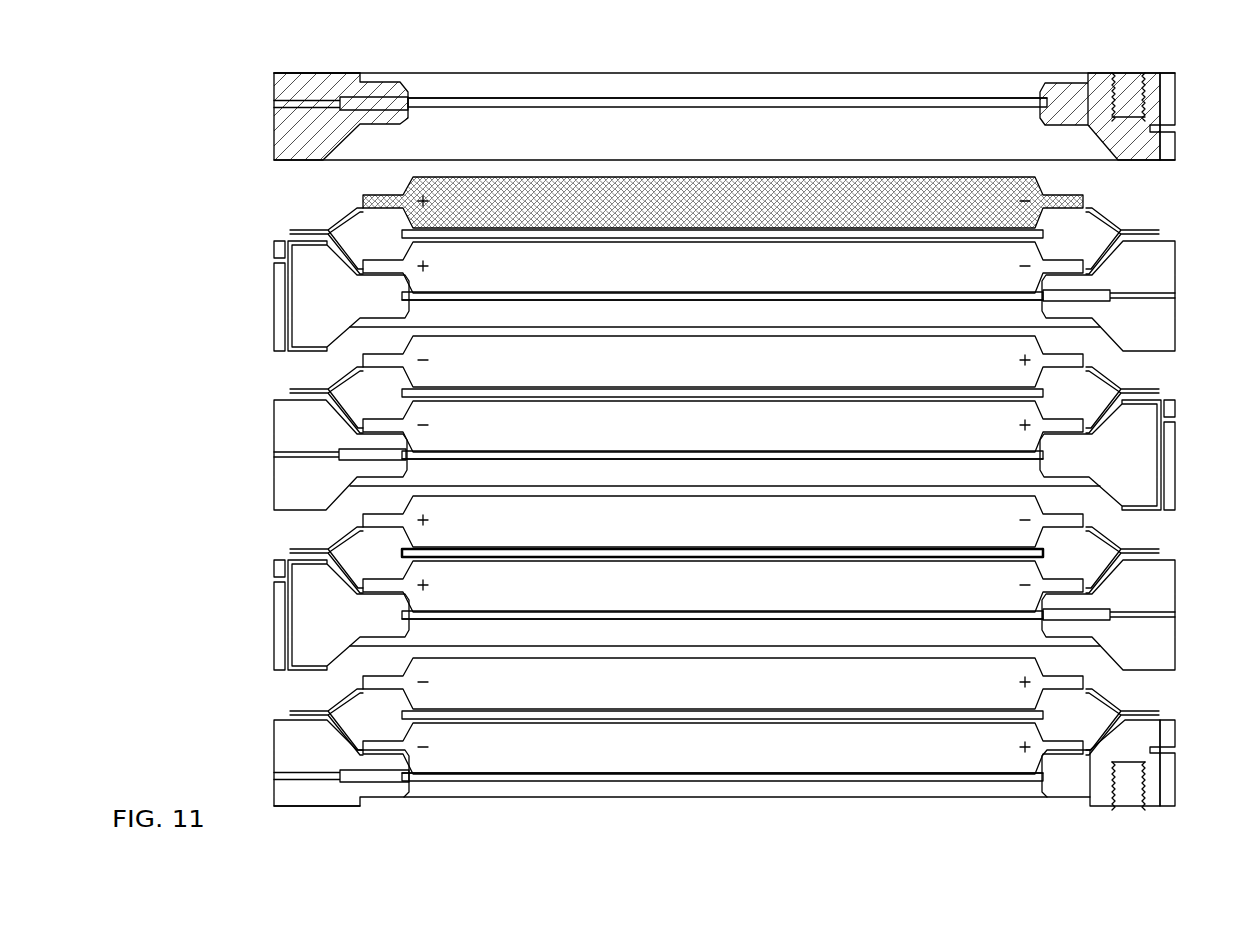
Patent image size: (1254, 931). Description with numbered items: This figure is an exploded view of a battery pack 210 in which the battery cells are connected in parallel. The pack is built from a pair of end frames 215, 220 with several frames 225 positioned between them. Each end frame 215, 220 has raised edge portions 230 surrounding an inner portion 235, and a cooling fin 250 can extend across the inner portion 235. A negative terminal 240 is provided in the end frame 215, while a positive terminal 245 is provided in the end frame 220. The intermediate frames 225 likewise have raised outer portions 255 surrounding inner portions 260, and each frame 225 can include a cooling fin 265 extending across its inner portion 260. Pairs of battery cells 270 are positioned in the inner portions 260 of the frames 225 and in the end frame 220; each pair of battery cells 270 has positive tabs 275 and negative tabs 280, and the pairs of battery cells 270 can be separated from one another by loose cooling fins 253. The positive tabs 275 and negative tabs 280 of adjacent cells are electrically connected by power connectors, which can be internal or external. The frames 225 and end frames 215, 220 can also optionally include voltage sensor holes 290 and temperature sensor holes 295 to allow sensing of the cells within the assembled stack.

The battery pack 210 is at (180, 113).
The end frame 215 is at (272, 125).
The end frame 220 is at (278, 741).
The frame 225 is at (278, 319).
The raised edge portion 230 is at (272, 78).
The inner portion 235 is at (636, 94).
The negative terminal 240 is at (1136, 90).
The positive terminal 245 is at (1127, 803).
The cooling fin 250 is at (840, 94).
The loose cooling fin 253 is at (1048, 235).
The raised outer portion 255 is at (290, 287).
The inner portion 260 is at (527, 326).
The cooling fin 265 is at (717, 301).
The pair of battery cells 270 is at (924, 215).
The positive tab 275 is at (310, 227).
The negative tab 280 is at (1139, 227).
The voltage sensor hole 290 is at (1165, 129).
The temperature sensor hole 295 is at (272, 104).